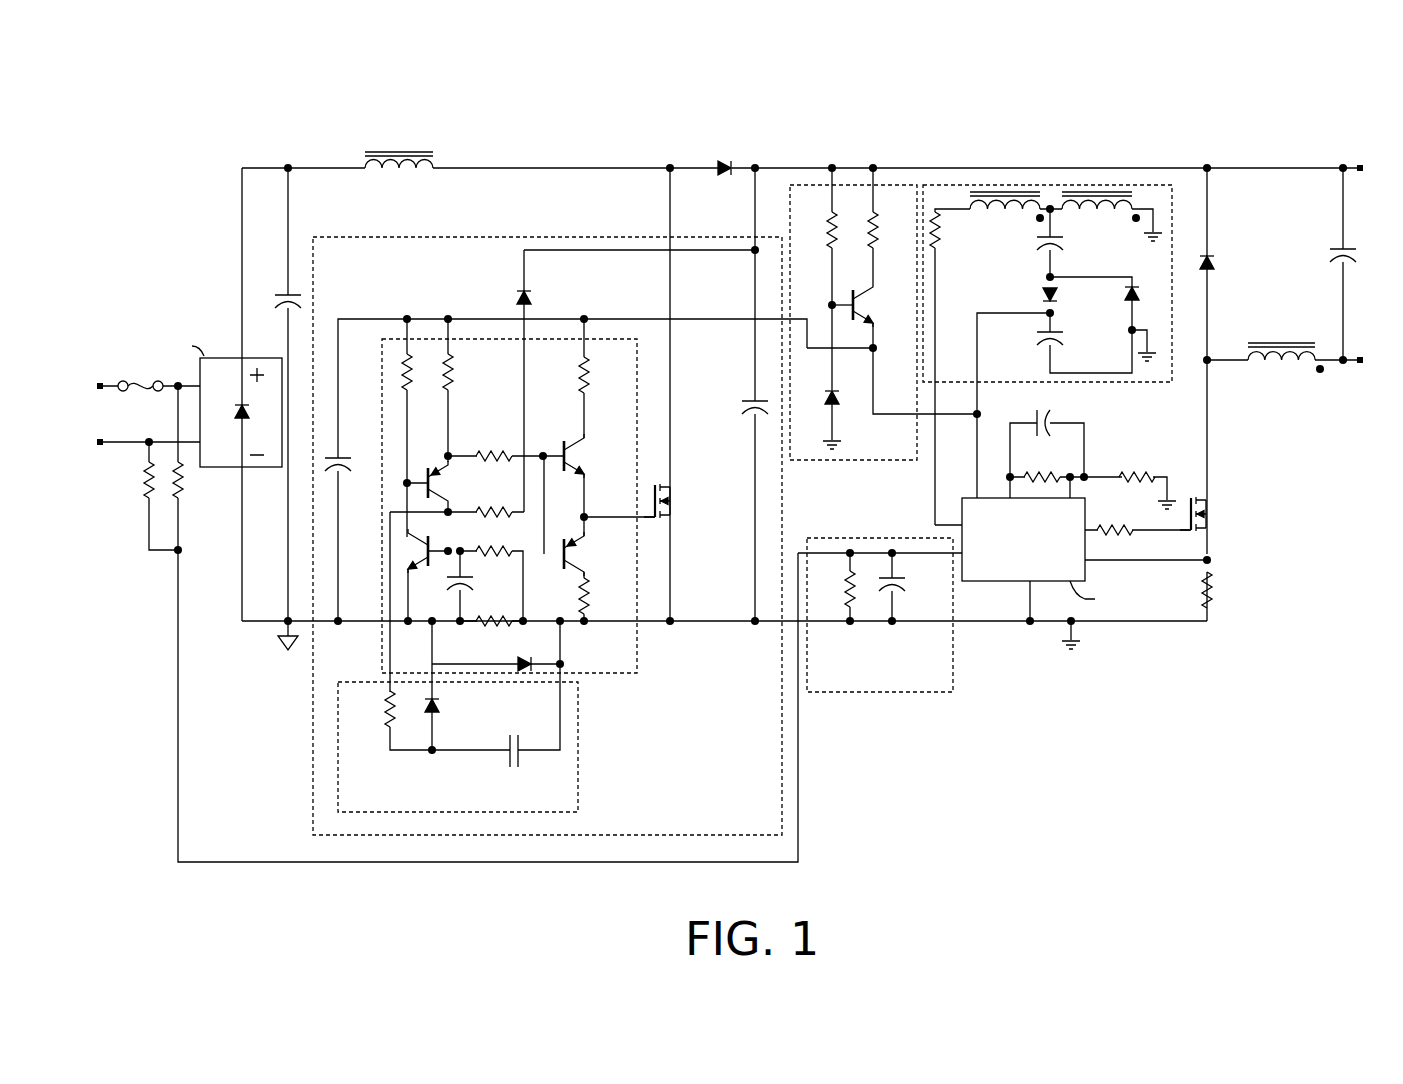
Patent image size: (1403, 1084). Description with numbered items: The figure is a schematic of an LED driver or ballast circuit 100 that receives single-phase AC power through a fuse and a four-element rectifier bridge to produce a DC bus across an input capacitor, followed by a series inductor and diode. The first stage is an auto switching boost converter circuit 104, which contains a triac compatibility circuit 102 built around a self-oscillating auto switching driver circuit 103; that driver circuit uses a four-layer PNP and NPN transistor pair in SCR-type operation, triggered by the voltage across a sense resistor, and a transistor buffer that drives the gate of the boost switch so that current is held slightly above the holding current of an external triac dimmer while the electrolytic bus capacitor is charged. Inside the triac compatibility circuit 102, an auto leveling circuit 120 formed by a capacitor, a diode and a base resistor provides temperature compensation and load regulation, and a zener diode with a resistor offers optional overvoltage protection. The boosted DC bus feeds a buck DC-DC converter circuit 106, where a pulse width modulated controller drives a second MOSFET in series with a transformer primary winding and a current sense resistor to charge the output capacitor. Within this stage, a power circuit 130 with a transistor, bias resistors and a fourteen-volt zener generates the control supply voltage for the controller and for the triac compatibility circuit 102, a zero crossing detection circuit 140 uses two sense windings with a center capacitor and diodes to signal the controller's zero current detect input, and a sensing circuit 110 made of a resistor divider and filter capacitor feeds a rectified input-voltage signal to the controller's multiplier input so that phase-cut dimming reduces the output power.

The LED driver or ballast circuit 100 is at (179, 160).
The triac compatibility circuit 102 is at (357, 231).
The auto switching driver circuit 103 is at (382, 358).
The boost converter circuit 104 is at (780, 141).
The buck DC-DC converter circuit 106 is at (1365, 141).
The sensing circuit 110 is at (880, 694).
The auto leveling circuit 120 is at (580, 796).
The power circuit 130 is at (851, 462).
The zero crossing detection circuit 140 is at (1048, 174).